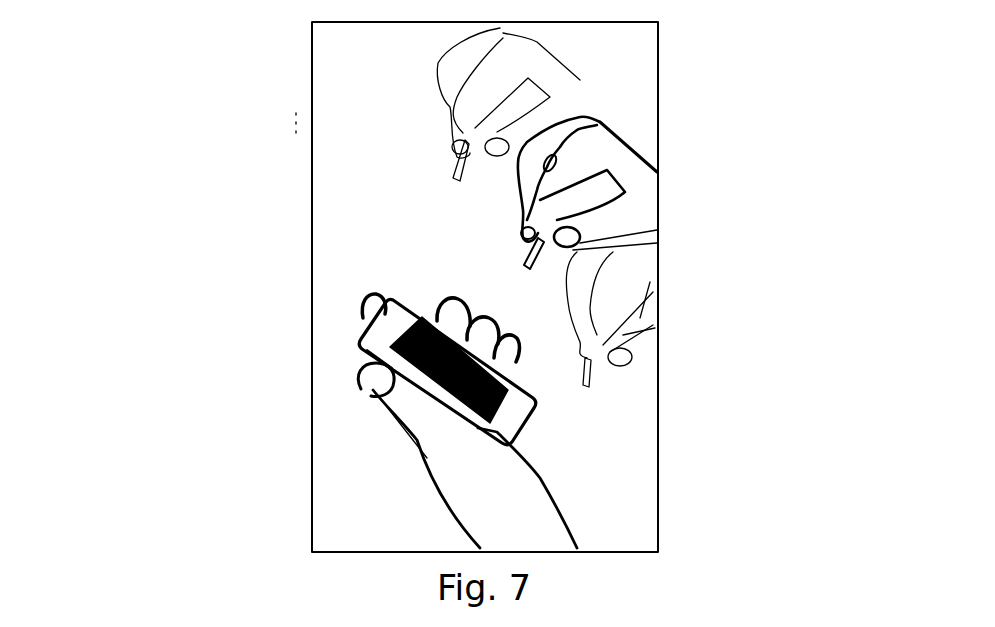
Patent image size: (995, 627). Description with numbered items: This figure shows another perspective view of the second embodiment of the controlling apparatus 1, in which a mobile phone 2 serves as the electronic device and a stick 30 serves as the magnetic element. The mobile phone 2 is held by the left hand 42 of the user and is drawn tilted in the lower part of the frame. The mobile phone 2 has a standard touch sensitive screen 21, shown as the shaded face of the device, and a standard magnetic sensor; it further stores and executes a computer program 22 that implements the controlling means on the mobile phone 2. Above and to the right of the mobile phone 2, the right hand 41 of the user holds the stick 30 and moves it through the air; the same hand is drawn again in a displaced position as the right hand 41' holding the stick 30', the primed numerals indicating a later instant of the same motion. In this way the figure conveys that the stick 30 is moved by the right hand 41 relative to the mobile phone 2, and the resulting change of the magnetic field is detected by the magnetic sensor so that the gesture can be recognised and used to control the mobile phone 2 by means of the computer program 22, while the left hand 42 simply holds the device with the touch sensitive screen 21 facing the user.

The controlling apparatus 1 is at (352, 244).
The mobile phone 2 is at (338, 320).
The touch sensitive screen 21 is at (410, 352).
The computer program 22 is at (380, 384).
The stick 30 is at (710, 303).
The stick 30' is at (689, 179).
The right hand 41 is at (719, 287).
The right hand 41' is at (691, 178).
The left hand 42 is at (428, 437).